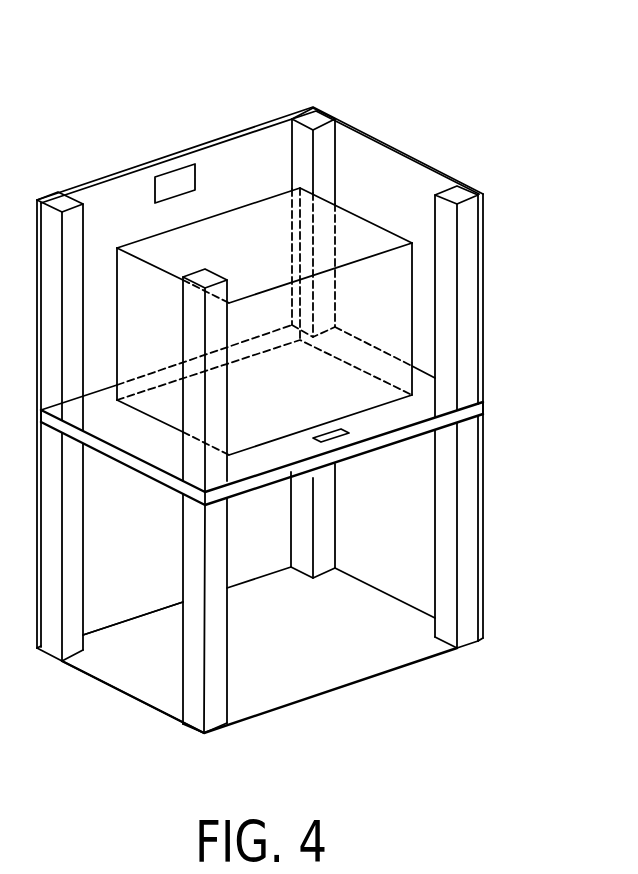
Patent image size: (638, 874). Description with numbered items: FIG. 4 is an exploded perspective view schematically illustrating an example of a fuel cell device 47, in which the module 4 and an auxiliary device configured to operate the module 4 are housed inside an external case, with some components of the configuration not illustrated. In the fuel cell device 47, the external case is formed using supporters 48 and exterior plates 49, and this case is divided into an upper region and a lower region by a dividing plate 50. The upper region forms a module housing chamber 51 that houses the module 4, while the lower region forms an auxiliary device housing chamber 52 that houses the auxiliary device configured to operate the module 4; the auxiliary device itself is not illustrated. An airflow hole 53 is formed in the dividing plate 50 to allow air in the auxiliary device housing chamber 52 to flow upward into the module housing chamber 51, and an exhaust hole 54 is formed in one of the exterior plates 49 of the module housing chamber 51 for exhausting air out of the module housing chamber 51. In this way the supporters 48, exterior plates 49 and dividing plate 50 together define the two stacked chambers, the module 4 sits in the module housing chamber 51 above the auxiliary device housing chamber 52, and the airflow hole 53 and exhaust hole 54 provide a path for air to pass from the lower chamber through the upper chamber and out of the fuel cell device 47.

The fuel cell device 47 is at (210, 66).
The supporter 48 is at (62, 200).
The exterior plate 49 is at (350, 123).
The dividing plate 50 is at (468, 412).
The module housing chamber 51 is at (370, 173).
The auxiliary device housing chamber 52 is at (118, 542).
The airflow hole 53 is at (349, 435).
The exhaust hole 54 is at (170, 180).
The module 4 is at (363, 233).